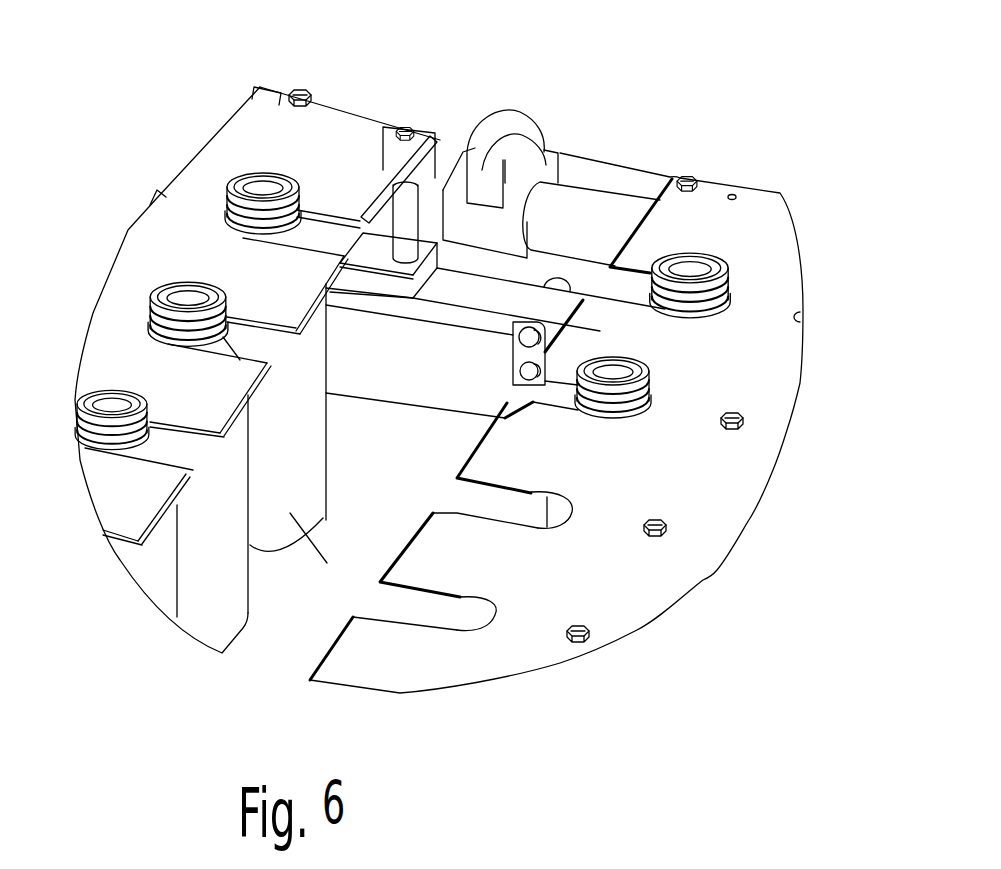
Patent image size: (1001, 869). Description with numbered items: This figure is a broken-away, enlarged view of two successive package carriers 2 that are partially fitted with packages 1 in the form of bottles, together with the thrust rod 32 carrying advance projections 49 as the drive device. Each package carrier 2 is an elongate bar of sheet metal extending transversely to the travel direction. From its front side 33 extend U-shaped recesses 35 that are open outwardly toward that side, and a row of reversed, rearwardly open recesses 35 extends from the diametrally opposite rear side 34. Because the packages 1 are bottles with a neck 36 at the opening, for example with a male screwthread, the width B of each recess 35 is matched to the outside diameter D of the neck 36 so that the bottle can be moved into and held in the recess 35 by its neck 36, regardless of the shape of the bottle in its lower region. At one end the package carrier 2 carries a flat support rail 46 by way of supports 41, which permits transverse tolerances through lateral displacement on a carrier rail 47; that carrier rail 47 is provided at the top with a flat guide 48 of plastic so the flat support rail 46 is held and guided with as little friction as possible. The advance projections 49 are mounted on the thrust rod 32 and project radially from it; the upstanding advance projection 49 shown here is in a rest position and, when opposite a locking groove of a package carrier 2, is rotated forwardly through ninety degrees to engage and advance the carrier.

The package 1 is at (233, 600).
The package carrier 2 is at (105, 316).
The thrust rod 32 is at (593, 210).
The front side 33 is at (250, 390).
The rear side 34 is at (410, 533).
The recess 35 is at (427, 612).
The neck 36 is at (228, 207).
The support 41 is at (403, 205).
The flat support rail 46 is at (355, 250).
The carrier rail 47 is at (398, 382).
The flat guide 48 is at (452, 315).
The advance projection 49 is at (500, 133).
The width B is at (513, 440).
The outside diameter D is at (673, 257).